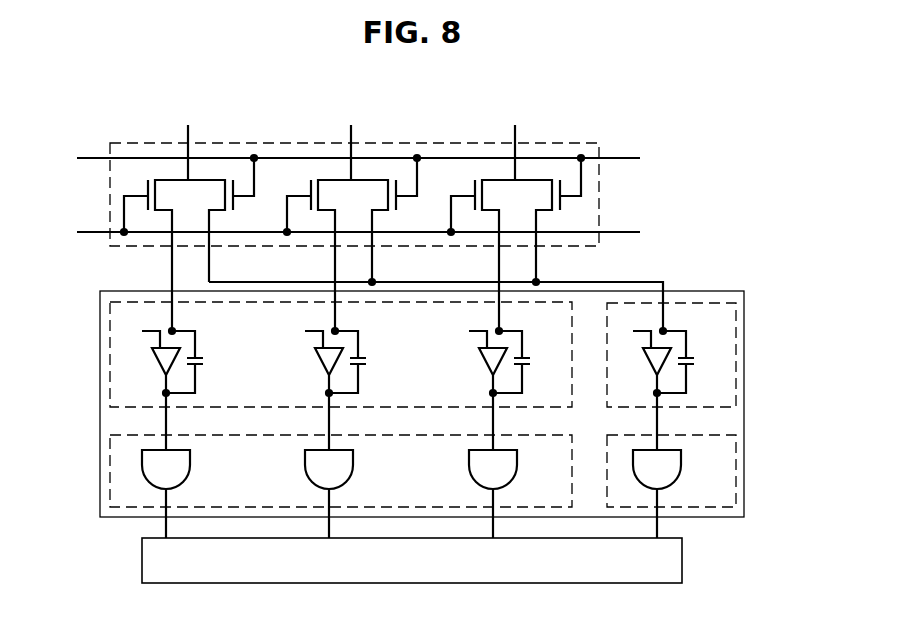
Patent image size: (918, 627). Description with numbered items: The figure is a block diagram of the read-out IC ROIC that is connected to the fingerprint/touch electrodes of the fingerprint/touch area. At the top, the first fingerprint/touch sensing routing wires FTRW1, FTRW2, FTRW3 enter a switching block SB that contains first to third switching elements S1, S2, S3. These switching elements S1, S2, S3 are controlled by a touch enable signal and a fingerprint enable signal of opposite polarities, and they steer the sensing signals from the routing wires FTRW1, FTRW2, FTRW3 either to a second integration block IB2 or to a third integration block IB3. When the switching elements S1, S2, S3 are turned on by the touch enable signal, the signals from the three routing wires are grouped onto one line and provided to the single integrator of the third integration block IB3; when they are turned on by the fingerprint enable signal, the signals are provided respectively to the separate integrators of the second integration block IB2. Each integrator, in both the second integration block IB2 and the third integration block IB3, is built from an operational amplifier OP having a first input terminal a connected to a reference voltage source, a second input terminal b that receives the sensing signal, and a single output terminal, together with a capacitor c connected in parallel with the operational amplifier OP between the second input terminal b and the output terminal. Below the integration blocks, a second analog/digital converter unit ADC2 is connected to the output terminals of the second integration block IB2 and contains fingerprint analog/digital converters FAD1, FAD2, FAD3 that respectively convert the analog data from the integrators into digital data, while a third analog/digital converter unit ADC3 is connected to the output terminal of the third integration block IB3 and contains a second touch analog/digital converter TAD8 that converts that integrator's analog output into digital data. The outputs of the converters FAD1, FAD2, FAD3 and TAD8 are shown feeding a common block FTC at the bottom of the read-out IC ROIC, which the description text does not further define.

The first fingerprint/touch sensing routing wire FTRW1 is at (188, 141).
The second fingerprint/touch sensing routing wire FTRW2 is at (351, 141).
The third fingerprint/touch sensing routing wire FTRW3 is at (515, 141).
The first switching element S1 is at (189, 243).
The second switching element S2 is at (352, 243).
The third switching element S3 is at (516, 243).
The switching block SB is at (599, 180).
The read-out IC ROIC is at (100, 500).
The second integration block IB2 is at (110, 355).
The third integration block IB3 is at (736, 355).
The second analog/digital converter unit ADC2 is at (110, 470).
The third analog/digital converter unit ADC3 is at (736, 470).
The first input terminal a is at (389, 333).
The second input terminal b is at (427, 321).
The capacitor c is at (439, 362).
The operational amplifier OP is at (402, 399).
The first fingerprint analog/digital converter FAD1 is at (188, 494).
The second fingerprint analog/digital converter FAD2 is at (351, 494).
The third fingerprint analog/digital converter FAD3 is at (515, 494).
The second touch analog/digital converter TAD8 is at (680, 494).
The fingerprint/touch controller FTC is at (412, 560).